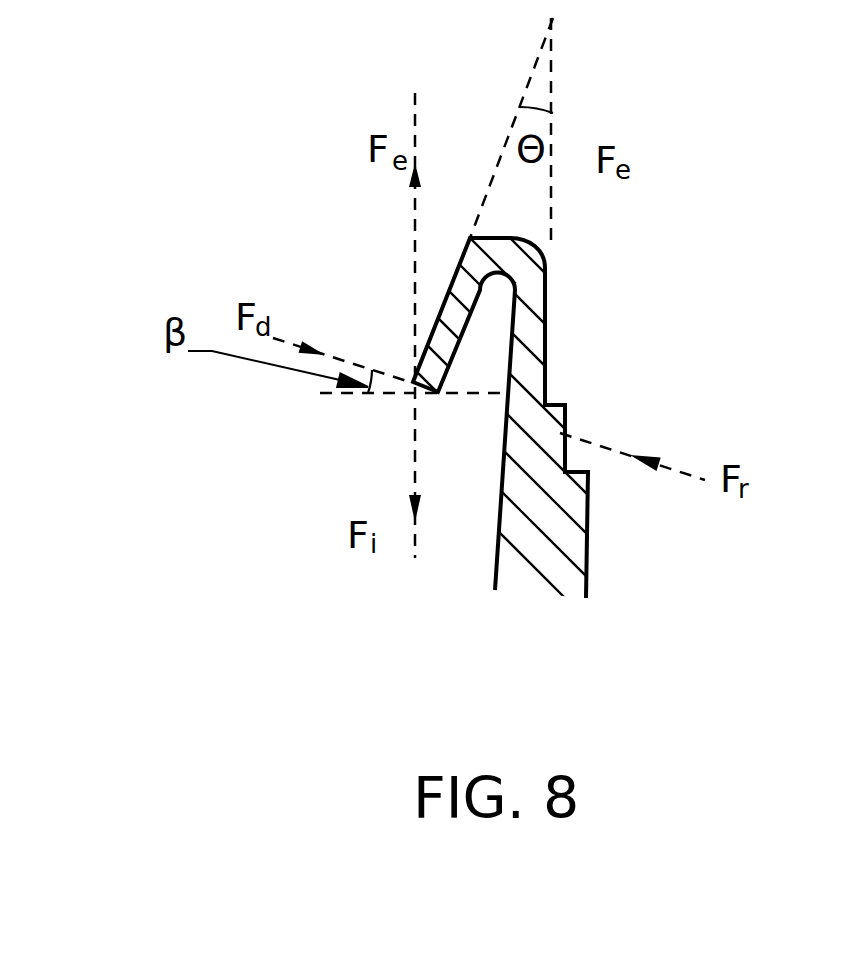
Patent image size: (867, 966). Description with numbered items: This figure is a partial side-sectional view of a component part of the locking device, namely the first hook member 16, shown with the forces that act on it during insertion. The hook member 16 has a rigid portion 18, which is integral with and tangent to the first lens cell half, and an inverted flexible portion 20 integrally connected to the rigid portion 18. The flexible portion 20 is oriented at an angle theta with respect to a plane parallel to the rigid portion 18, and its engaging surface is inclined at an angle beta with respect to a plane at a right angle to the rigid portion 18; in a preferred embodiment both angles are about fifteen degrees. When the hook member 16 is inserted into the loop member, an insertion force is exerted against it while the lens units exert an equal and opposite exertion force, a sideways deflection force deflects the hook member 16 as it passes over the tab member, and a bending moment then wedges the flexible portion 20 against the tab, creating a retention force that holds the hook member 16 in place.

The first hook member 16 is at (323, 372).
The rigid portion 18 is at (545, 406).
The inverted flexible portion 20 is at (433, 341).